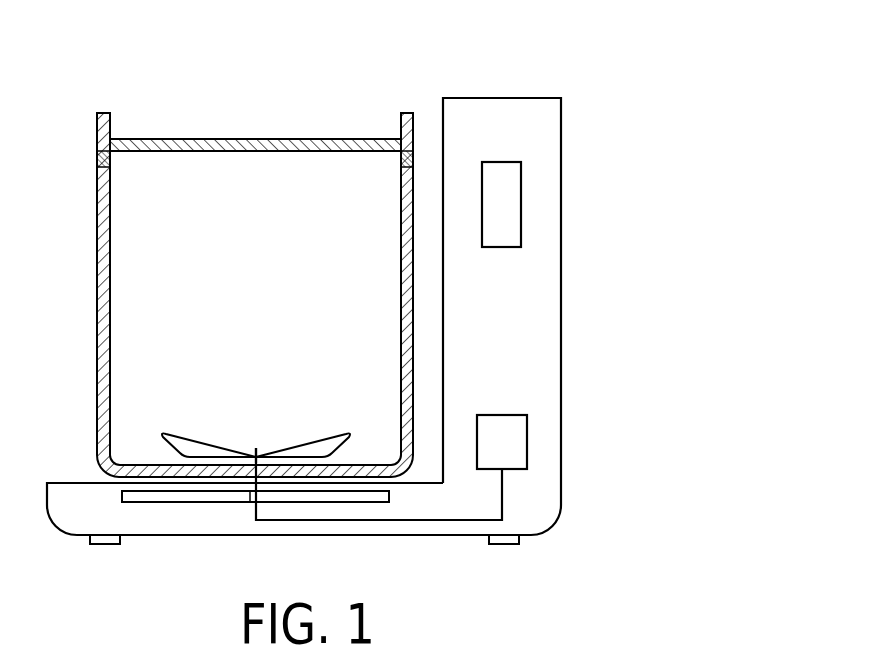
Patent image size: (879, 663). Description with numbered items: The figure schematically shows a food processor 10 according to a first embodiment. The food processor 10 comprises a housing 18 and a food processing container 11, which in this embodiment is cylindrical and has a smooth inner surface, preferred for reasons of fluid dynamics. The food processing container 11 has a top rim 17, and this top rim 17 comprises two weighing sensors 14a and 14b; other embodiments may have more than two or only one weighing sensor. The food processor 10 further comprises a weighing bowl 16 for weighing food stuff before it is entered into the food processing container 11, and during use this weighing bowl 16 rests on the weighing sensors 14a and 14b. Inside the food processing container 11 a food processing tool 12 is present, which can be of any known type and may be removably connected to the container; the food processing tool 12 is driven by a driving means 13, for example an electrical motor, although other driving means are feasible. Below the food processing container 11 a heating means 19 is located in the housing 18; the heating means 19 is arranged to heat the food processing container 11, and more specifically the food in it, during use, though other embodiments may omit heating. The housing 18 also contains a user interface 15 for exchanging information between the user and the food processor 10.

The food processor 10 is at (628, 68).
The food processing container 11 is at (98, 298).
The food processing tool 12 is at (318, 445).
The driving means 13 is at (515, 441).
The weighing sensor 14a is at (98, 160).
The weighing sensor 14b is at (400, 158).
The user interface 15 is at (508, 202).
The weighing bowl 16 is at (98, 120).
The top rim 17 is at (114, 169).
The housing 18 is at (540, 314).
The heating means 19 is at (175, 495).